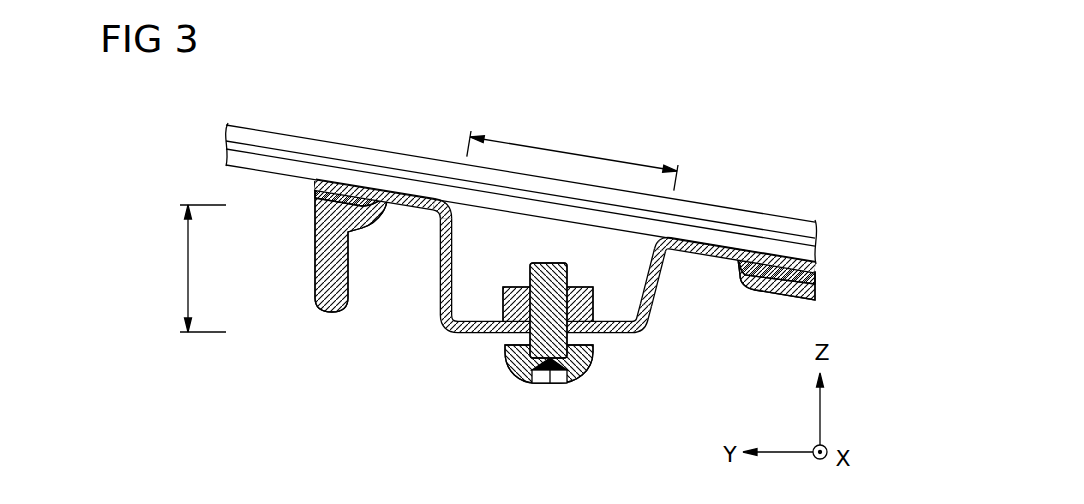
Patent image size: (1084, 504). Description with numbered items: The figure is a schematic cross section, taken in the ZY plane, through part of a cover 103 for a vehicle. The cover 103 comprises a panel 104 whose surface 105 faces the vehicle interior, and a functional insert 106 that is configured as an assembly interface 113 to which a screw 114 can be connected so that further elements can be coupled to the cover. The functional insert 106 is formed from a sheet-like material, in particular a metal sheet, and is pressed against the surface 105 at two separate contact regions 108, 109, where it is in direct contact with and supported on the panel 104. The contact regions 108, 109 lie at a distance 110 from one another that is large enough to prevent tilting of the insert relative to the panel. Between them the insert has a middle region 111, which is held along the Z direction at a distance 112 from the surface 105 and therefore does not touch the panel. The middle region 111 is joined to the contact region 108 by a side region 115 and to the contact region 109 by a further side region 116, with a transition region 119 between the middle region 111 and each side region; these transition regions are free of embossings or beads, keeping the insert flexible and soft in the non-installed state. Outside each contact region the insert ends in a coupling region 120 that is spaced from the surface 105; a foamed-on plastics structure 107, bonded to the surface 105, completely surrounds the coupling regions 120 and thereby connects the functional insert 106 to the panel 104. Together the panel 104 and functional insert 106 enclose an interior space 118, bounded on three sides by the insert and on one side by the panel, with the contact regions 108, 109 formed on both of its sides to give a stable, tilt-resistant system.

The cover 103 is at (824, 184).
The panel 104 is at (314, 150).
The surface 105 is at (646, 252).
The functional insert 106 is at (448, 337).
The foamed-on plastics structure 107 is at (317, 266).
The contact region 108 is at (400, 197).
The contact region 109 is at (714, 225).
The distance 110 is at (567, 152).
The middle region 111 is at (608, 333).
The distance 112 is at (187, 262).
The assembly interface 113 is at (520, 292).
The screw 114 is at (522, 360).
The side region 115 is at (468, 283).
The side region 116 is at (673, 248).
The interior space 118 is at (447, 328).
The transition region 119 is at (645, 330).
The coupling region 120 is at (318, 204).